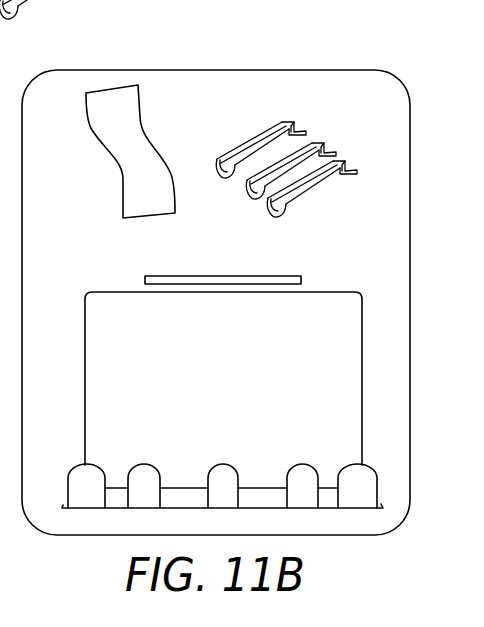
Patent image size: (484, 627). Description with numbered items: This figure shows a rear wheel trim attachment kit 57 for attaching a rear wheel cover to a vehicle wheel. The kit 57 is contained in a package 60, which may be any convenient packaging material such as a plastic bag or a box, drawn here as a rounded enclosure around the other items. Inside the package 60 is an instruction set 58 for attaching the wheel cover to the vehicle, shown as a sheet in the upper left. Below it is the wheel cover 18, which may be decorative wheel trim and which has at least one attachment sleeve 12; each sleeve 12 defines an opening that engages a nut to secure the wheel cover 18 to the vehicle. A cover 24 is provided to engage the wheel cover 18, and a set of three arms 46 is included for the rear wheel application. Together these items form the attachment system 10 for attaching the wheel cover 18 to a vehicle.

The attachment system 10 is at (361, 230).
The attachment sleeve 12 is at (84, 481).
The wheel cover 18 is at (200, 409).
The cover 24 is at (168, 277).
The arm 46 is at (286, 120).
The rear wheel trim attachment kit 57 is at (325, 46).
The instruction set 58 is at (135, 147).
The package 60 is at (195, 70).